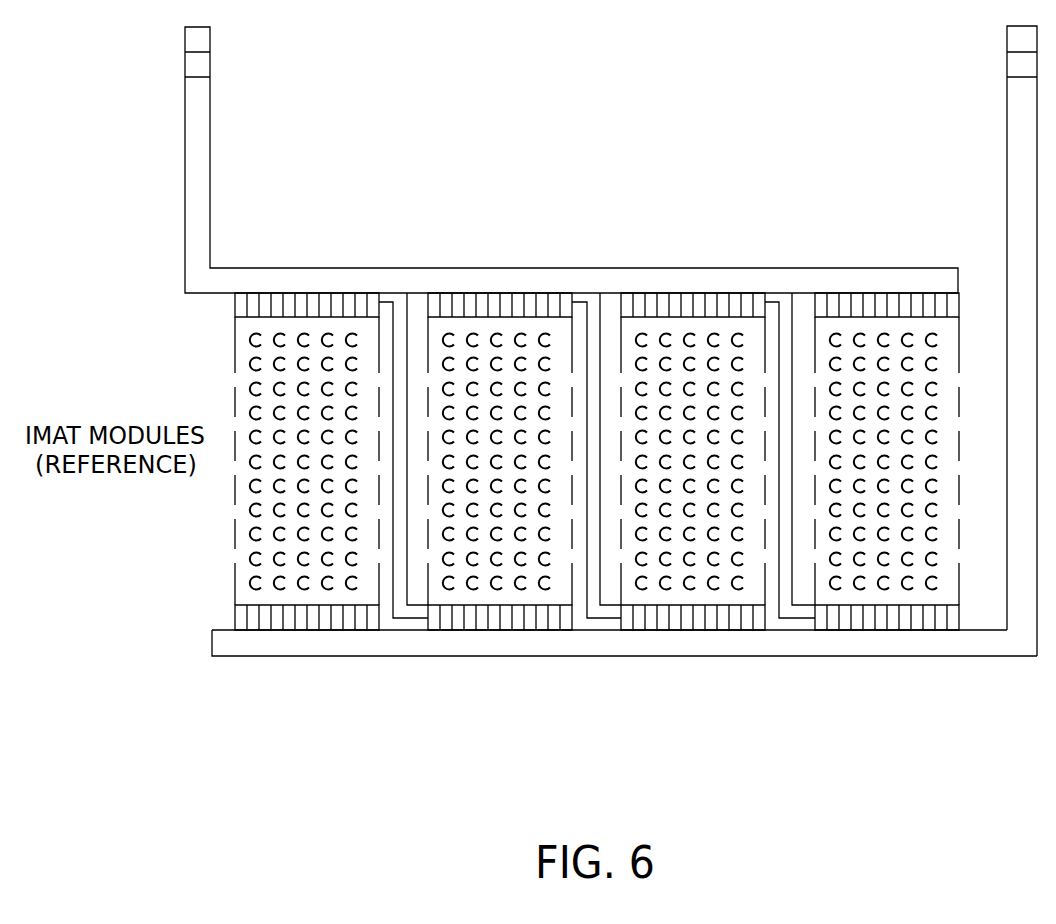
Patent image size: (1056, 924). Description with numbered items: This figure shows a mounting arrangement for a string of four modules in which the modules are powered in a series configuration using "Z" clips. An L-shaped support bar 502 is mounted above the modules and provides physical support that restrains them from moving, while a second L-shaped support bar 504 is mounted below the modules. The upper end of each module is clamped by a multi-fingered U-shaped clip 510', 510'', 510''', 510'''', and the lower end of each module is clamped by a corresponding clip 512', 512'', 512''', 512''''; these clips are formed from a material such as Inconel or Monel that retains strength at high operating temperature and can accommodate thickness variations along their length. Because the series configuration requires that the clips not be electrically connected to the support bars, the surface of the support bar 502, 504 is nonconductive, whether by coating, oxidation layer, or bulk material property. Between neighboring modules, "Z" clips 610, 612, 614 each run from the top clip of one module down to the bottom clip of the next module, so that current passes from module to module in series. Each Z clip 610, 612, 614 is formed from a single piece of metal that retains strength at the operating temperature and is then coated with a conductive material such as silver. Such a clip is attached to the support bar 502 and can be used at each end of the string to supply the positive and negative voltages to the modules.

The L-shaped support bar 502 is at (200, 188).
The second L-shaped support bar 504 is at (617, 642).
The clip 510' is at (322, 259).
The clip 510'' is at (501, 259).
The clip 510''' is at (693, 259).
The clip 510'''' is at (887, 259).
The clip 512' is at (307, 670).
The clip 512'' is at (500, 670).
The clip 512''' is at (693, 670).
The clip 512'''' is at (887, 670).
The Z clip 610 is at (405, 628).
The Z clip 612 is at (598, 628).
The Z clip 614 is at (793, 625).